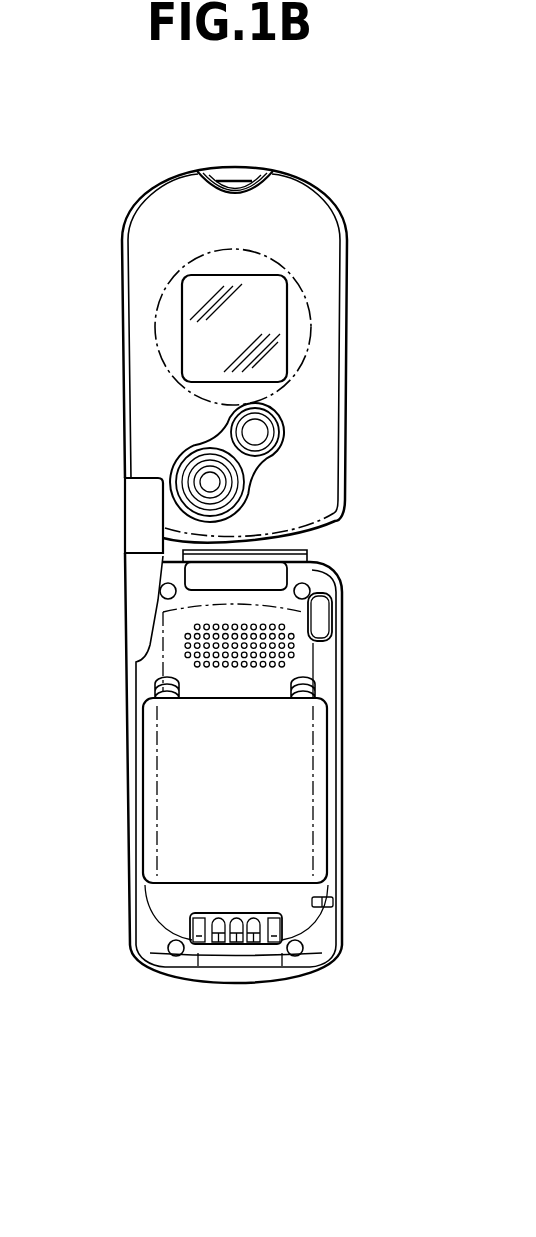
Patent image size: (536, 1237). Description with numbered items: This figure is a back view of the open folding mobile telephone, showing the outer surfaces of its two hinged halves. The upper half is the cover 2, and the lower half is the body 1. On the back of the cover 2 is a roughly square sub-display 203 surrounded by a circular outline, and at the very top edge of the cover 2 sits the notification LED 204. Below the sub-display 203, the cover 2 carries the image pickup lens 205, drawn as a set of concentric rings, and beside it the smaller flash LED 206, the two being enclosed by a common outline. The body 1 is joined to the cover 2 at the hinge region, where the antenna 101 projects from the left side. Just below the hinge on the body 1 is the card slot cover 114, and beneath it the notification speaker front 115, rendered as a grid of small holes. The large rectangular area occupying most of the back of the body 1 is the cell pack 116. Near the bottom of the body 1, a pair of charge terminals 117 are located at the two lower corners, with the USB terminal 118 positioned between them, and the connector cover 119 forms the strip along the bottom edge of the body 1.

The body 1 is at (300, 927).
The cover 2 is at (318, 222).
The antenna 101 is at (147, 508).
The card slot cover 114 is at (268, 578).
The notification speaker front 115 is at (270, 655).
The cell pack 116 is at (292, 772).
The charge terminals 117 is at (167, 967).
The USB terminal 118 is at (218, 943).
The connector cover 119 is at (197, 978).
The sub-display 203 is at (252, 310).
The notification LED 204 is at (233, 172).
The image pickup lens 205 is at (212, 482).
The flash LED 206 is at (255, 432).